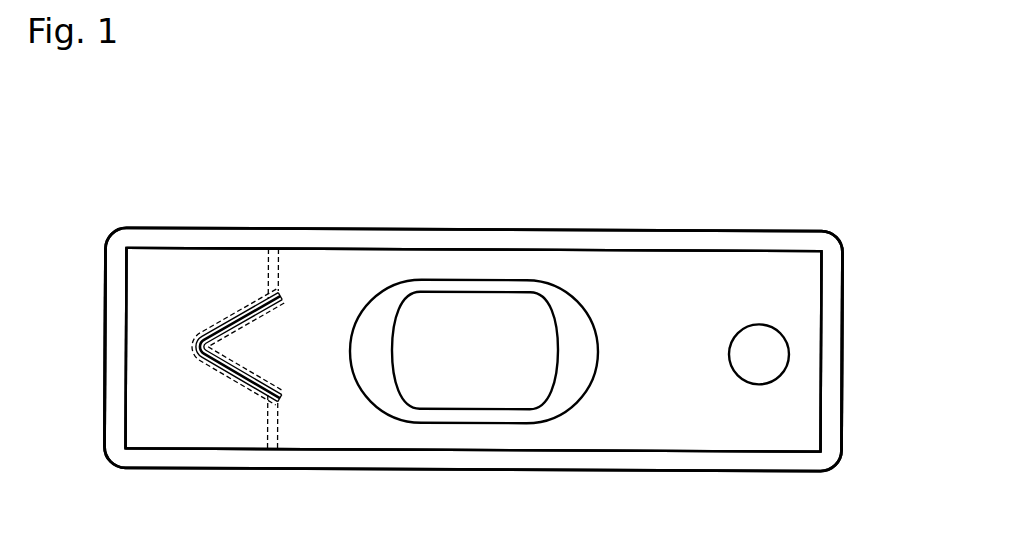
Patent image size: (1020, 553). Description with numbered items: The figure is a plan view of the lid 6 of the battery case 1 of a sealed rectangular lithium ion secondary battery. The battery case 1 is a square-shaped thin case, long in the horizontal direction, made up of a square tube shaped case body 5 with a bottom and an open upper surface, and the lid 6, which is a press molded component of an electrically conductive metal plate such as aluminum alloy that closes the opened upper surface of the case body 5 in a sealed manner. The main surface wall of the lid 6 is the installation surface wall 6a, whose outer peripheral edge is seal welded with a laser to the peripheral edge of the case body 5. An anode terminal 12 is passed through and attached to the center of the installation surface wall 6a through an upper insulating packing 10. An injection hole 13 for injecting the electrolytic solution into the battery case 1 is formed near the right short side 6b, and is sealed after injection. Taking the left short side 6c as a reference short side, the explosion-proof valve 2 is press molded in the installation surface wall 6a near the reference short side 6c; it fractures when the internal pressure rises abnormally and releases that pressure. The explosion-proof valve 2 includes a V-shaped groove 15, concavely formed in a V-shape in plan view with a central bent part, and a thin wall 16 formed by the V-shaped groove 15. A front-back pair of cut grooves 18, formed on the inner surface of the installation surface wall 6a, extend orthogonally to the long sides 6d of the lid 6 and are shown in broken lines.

The battery case 1 is at (693, 228).
The explosion-proof valve 2 is at (183, 328).
The case body 5 is at (163, 238).
The lid 6 is at (360, 273).
The installation surface wall 6a is at (663, 430).
The right short side 6b is at (822, 355).
The left short side 6c is at (125, 347).
The long sides 6d is at (517, 249).
The upper insulating packing 10 is at (572, 358).
The anode terminal 12 is at (534, 331).
The injection hole 13 is at (731, 356).
The V-shaped groove 15 is at (228, 382).
The thin wall 16 is at (255, 373).
The cut grooves 18 is at (282, 278).